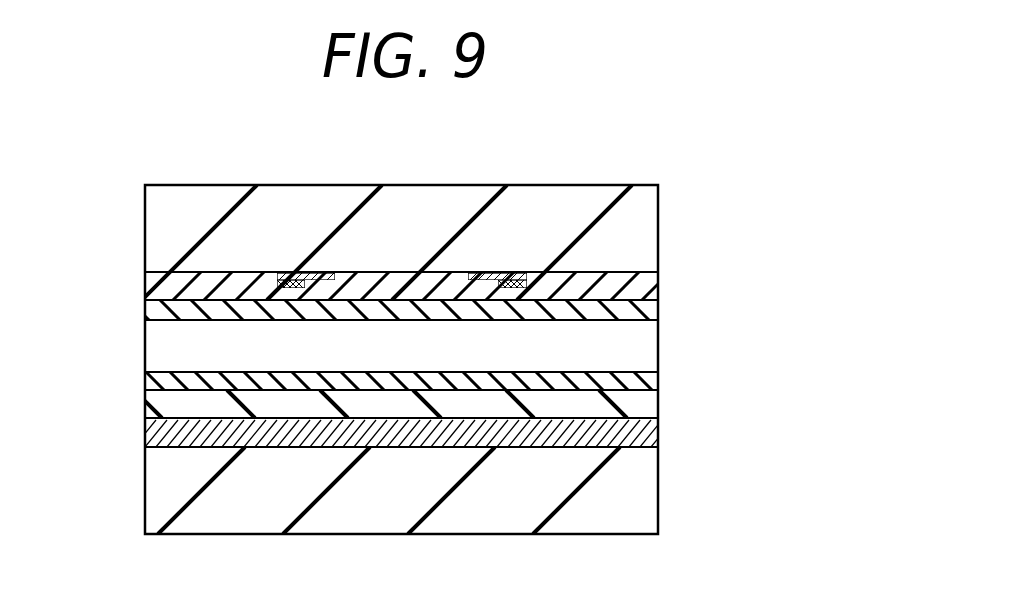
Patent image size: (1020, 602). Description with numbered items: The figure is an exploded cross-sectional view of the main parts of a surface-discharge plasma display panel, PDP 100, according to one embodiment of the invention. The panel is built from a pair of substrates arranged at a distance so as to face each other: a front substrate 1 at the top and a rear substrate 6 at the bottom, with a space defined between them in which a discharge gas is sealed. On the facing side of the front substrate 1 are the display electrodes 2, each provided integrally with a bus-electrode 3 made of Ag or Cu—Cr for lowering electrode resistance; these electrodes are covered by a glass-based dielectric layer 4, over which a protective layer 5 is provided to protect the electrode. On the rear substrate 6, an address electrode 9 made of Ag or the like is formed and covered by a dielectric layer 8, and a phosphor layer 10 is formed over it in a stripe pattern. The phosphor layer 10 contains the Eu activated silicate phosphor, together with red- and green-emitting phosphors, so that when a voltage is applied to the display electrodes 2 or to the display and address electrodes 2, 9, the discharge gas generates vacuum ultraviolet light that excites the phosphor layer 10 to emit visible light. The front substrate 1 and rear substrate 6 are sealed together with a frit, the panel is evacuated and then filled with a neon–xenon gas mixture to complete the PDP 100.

The PDP 100 is at (668, 175).
The front substrate 1 is at (155, 222).
The display electrode 2 is at (318, 273).
The bus-electrode 3 is at (293, 276).
The dielectric layer 4 is at (158, 277).
The protective layer 5 is at (157, 307).
The rear substrate 6 is at (156, 492).
The dielectric layer 8 is at (156, 398).
The address electrode 9 is at (156, 433).
The phosphor layer 10 is at (658, 378).